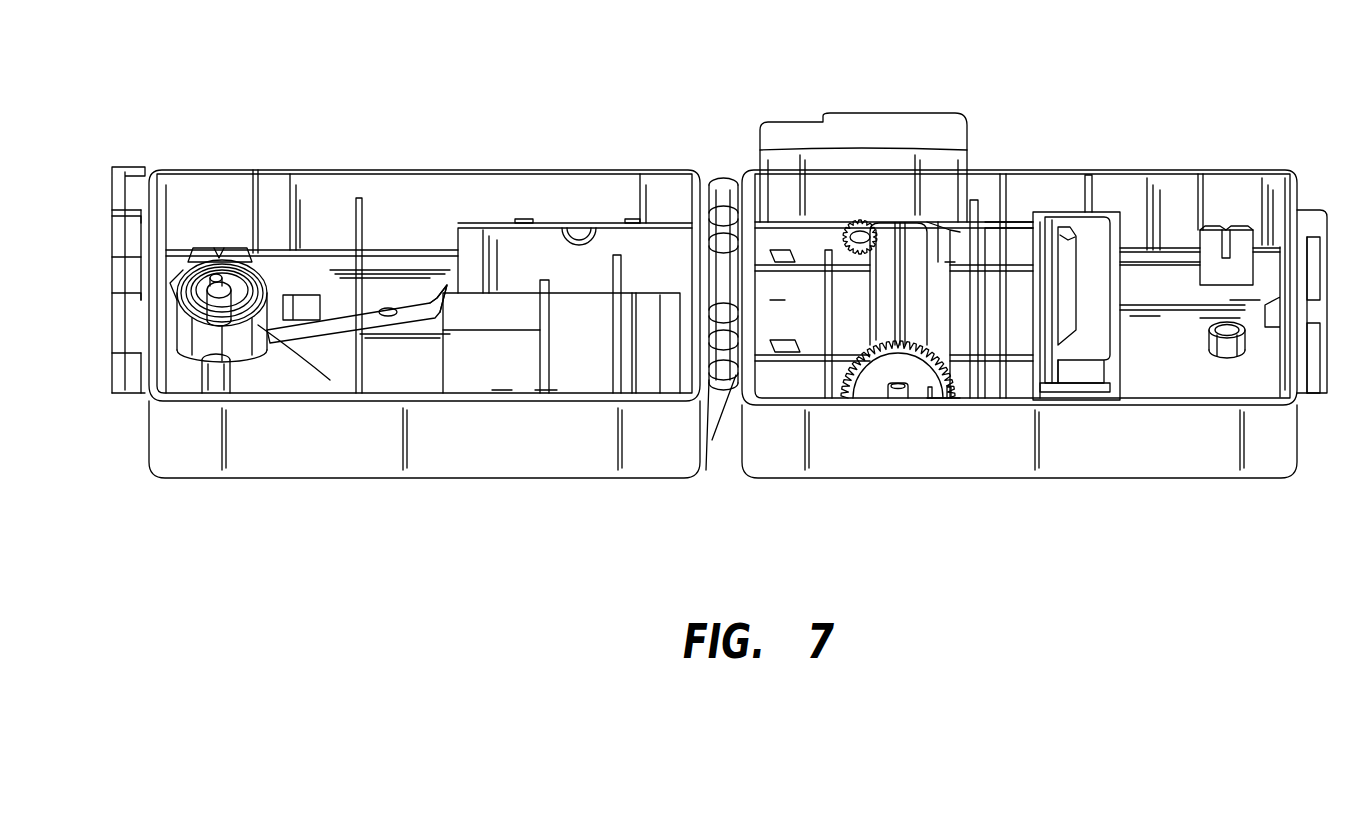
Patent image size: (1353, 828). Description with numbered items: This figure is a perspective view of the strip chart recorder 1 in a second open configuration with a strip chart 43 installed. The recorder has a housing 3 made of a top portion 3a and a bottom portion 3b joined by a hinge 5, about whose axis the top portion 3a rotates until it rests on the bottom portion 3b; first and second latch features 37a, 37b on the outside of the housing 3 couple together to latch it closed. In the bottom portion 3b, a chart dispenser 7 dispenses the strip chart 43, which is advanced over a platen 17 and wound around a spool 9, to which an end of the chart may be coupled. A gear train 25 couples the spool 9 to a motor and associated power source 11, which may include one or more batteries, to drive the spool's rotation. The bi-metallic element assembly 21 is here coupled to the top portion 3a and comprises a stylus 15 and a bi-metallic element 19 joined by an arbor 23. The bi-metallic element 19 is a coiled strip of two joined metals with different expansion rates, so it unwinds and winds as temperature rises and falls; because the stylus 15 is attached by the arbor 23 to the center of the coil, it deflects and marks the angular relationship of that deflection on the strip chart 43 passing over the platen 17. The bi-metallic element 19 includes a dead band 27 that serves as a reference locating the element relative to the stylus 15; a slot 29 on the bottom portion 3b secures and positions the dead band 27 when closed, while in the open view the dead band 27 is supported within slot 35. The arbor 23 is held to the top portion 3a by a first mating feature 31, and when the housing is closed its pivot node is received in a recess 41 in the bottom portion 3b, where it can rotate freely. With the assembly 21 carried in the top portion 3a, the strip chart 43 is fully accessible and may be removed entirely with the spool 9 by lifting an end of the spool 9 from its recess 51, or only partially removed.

The strip chart recorder 1 is at (658, 128).
The housing 3 is at (1240, 165).
The top portion 3a is at (540, 170).
The bottom portion 3b is at (1268, 170).
The hinge 5 is at (722, 177).
The chart dispenser 7 is at (1078, 355).
The spool 9 is at (893, 270).
The motor and associated power source 11 is at (880, 115).
The stylus 15 is at (440, 290).
The platen 17 is at (1005, 240).
The bi-metallic element 19 is at (268, 335).
The bi-metallic element assembly 21 is at (250, 358).
The arbor 23 is at (190, 275).
The gear train 25 is at (858, 220).
The dead band 27 is at (218, 258).
The slot 29 is at (1222, 240).
The first mating feature 31 is at (193, 377).
The slot 35 is at (213, 258).
The first latch feature 37a is at (135, 170).
The second latch feature 37b is at (1327, 393).
The recess 41 is at (1212, 326).
The strip chart 43 is at (945, 262).
The recess 51 is at (900, 400).